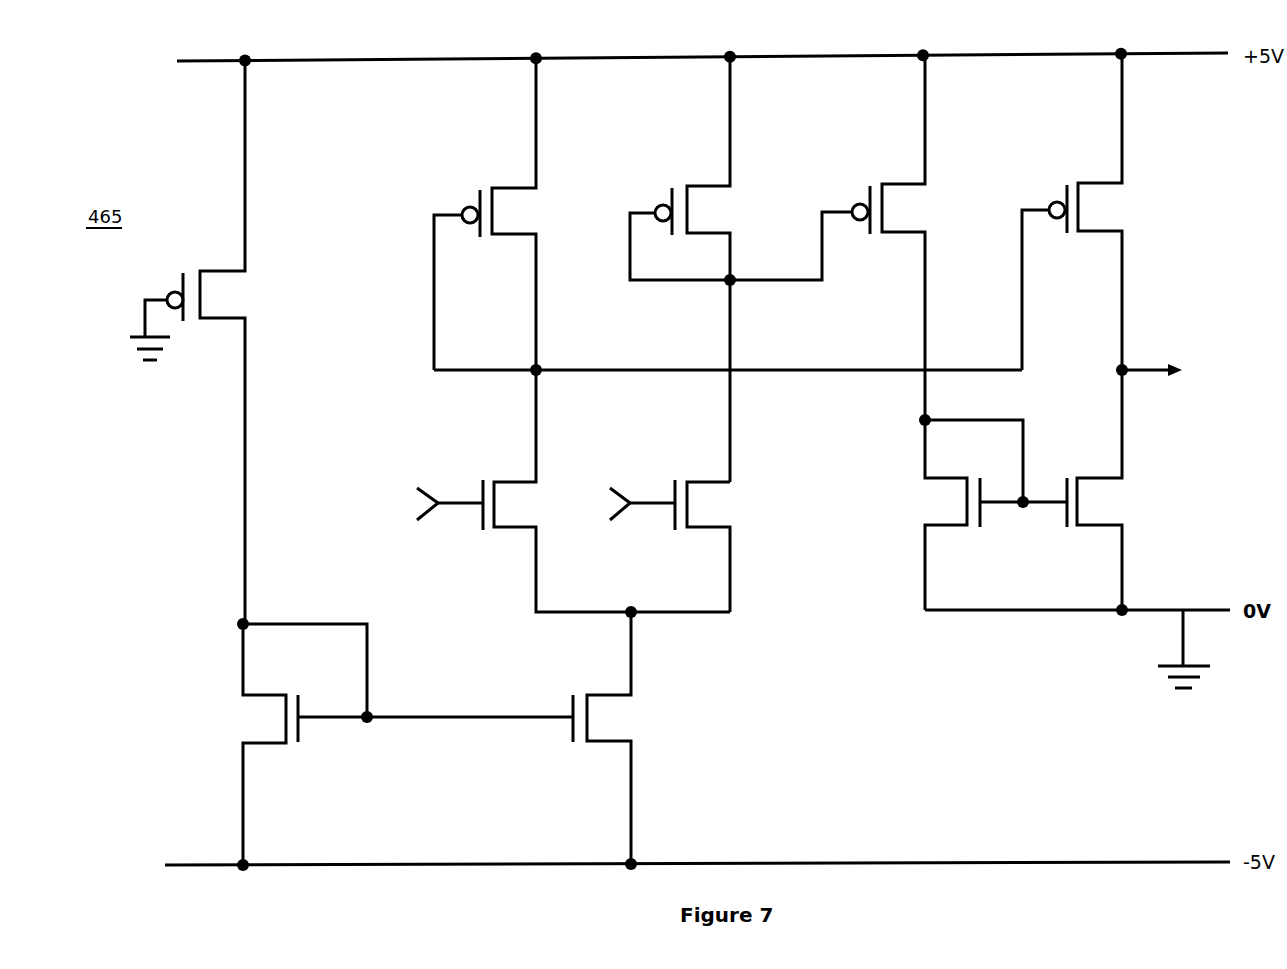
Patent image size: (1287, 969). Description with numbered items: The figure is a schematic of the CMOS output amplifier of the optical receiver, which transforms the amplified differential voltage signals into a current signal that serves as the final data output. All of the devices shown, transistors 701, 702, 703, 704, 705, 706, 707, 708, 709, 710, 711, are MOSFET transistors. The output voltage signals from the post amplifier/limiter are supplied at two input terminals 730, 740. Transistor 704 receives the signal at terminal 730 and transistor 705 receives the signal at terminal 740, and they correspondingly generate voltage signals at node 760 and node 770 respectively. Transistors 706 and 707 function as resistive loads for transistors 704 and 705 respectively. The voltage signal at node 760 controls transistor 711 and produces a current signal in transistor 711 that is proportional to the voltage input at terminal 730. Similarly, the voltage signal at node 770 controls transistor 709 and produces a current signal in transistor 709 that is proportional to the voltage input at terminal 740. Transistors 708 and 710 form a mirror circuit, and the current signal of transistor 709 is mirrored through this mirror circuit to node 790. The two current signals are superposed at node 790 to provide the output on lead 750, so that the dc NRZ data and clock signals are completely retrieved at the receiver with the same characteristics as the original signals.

The transistor 701 is at (228, 298).
The transistor 702 is at (260, 715).
The transistor 703 is at (612, 718).
The transistor 704 is at (512, 510).
The transistor 705 is at (705, 510).
The transistor 706 is at (517, 218).
The transistor 707 is at (710, 216).
The transistor 708 is at (933, 496).
The transistor 709 is at (905, 216).
The transistor 710 is at (1104, 510).
The transistor 711 is at (1100, 214).
The terminal 730 is at (445, 497).
The terminal 740 is at (638, 497).
The lead 750 is at (1140, 368).
The node 760 is at (538, 368).
The node 770 is at (728, 280).
The node 790 is at (1120, 369).